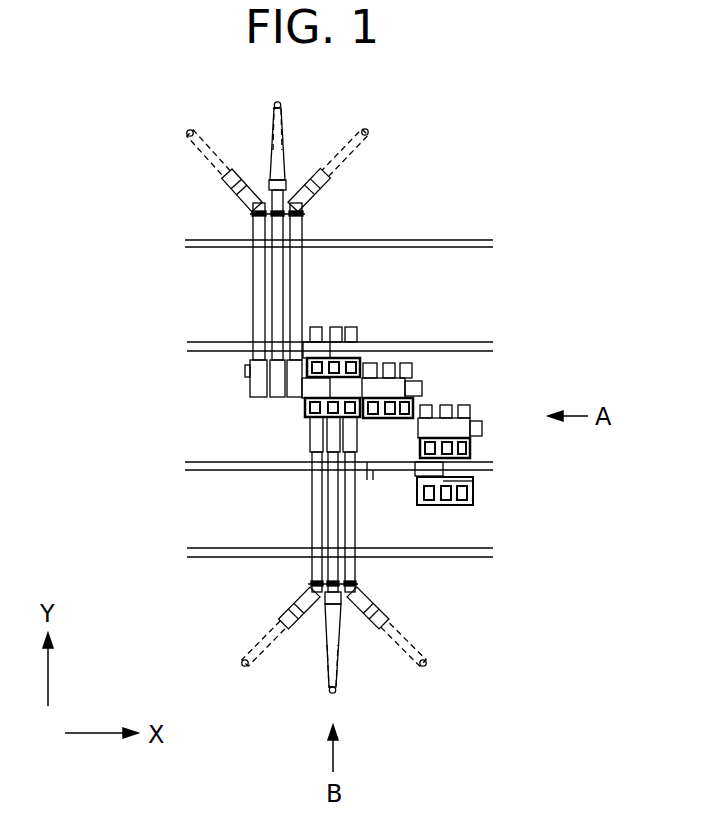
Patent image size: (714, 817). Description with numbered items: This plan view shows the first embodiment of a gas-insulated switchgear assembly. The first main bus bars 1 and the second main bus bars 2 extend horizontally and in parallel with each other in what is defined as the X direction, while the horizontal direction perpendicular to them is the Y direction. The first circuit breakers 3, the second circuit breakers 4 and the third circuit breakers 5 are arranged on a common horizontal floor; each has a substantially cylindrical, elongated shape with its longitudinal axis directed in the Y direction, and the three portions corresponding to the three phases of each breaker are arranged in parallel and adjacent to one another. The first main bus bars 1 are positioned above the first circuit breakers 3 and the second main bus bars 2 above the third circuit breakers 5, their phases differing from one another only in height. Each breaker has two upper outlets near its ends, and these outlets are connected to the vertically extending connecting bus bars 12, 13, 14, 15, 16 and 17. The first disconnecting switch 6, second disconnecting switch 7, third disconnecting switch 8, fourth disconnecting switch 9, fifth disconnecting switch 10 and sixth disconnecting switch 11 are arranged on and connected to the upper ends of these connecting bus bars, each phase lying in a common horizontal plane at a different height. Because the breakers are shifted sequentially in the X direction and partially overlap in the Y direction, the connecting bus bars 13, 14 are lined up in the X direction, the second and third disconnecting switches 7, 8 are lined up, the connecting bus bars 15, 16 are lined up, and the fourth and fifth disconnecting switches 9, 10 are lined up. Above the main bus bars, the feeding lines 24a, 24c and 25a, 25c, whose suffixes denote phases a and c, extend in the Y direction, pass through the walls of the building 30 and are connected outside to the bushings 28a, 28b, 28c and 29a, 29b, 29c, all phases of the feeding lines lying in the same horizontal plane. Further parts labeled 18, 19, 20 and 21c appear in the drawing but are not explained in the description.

The first main bus bars 1 is at (190, 460).
The second main bus bars 2 is at (197, 340).
The first circuit breakers 3 is at (448, 404).
The second circuit breakers 4 is at (374, 392).
The third circuit breakers 5 is at (312, 340).
The first disconnecting switch 6 is at (422, 476).
The second disconnecting switch 7 is at (470, 422).
The third disconnecting switch 8 is at (318, 470).
The fourth disconnecting switch 9 is at (410, 372).
The fifth disconnecting switch 10 is at (282, 397).
The sixth disconnecting switch 11 is at (338, 328).
The connecting bus bar 12 is at (424, 505).
The connecting bus bar 13 is at (475, 480).
The connecting bus bar 14 is at (369, 480).
The connecting bus bar 15 is at (432, 412).
The connecting bus bar 16 is at (300, 408).
The connecting bus bar 17 is at (305, 350).
The connector extension 18 is at (482, 430).
The terminal squares 19 is at (370, 378).
The fitting block 20 is at (312, 432).
The left fitting block 21c is at (248, 383).
The feeding line 24a is at (352, 535).
The feeding line 24c is at (310, 523).
The feeding line 25a is at (300, 266).
The feeding line 25c is at (258, 266).
The bushing 28a is at (392, 630).
The bushing 28b is at (337, 645).
The bushing 28c is at (273, 635).
The bushing 29a is at (333, 170).
The bushing 29b is at (281, 138).
The bushing 29c is at (230, 156).
The building 30 is at (193, 238).